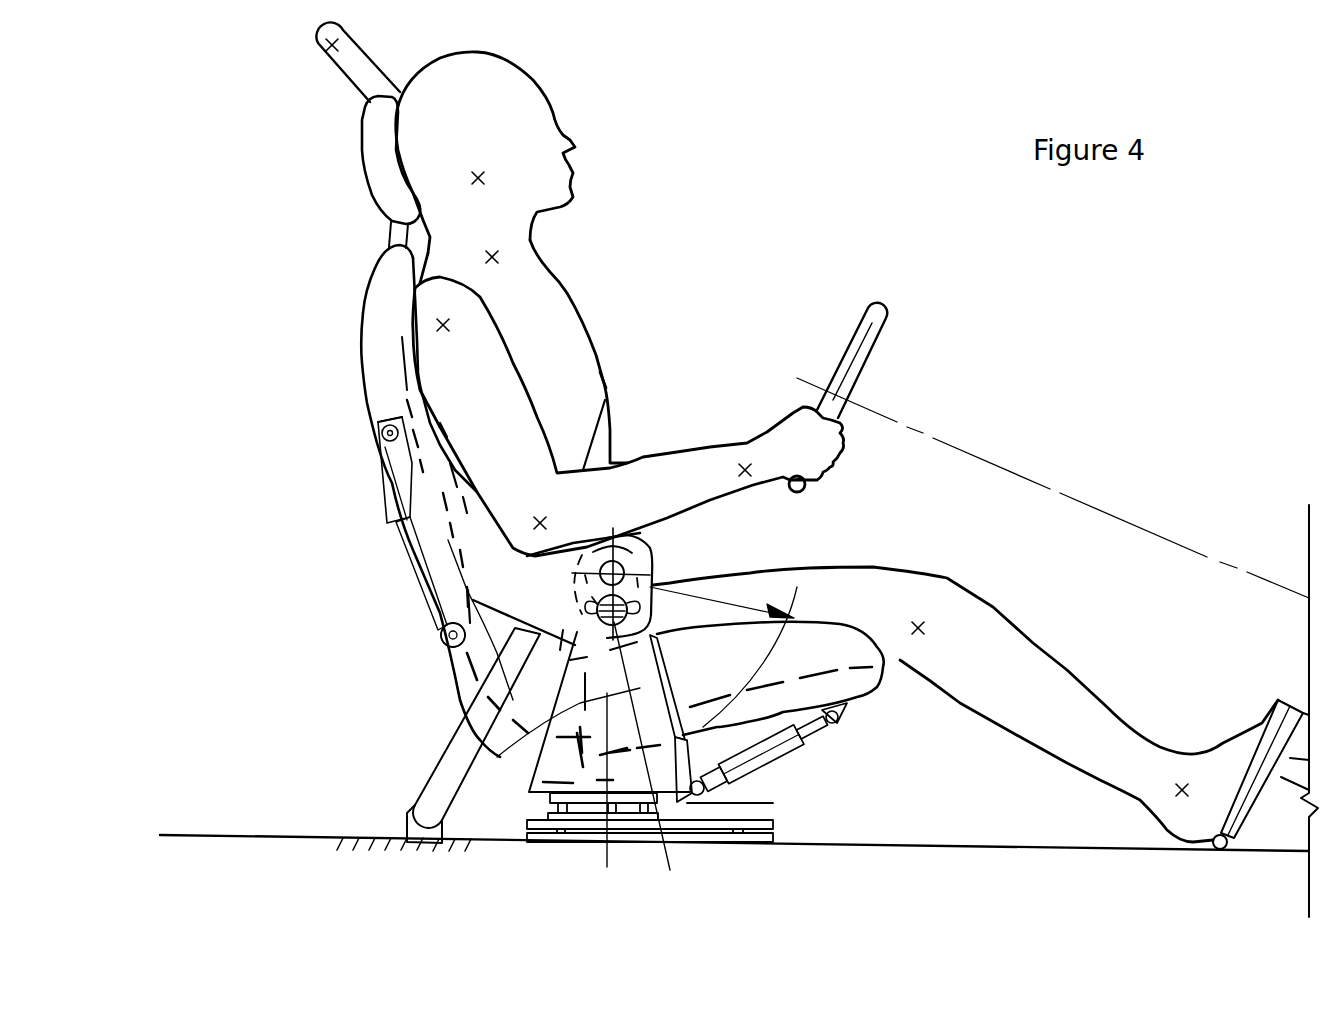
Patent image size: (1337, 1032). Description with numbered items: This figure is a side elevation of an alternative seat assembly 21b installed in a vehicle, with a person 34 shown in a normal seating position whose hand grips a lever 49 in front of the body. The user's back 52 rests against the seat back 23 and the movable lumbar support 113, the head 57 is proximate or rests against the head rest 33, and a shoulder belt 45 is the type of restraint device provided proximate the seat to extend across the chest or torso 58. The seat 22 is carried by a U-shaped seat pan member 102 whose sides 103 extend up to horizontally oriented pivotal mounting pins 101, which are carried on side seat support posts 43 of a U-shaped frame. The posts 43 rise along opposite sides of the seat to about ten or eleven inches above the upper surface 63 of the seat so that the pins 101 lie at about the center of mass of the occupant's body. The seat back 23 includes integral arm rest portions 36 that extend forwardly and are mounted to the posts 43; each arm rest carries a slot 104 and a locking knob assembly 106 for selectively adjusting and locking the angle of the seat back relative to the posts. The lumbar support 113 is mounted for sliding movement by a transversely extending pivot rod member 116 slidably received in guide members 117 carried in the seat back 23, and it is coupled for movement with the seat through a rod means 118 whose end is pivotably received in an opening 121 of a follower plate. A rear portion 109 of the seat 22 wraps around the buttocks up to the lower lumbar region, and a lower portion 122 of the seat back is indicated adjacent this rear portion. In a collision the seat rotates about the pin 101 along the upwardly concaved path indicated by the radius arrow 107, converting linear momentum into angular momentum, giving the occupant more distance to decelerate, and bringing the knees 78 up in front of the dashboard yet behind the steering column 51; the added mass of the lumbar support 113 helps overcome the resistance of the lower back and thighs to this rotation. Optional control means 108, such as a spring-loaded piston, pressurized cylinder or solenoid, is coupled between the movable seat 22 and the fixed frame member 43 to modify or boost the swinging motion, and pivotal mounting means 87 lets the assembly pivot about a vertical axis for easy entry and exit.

The head 57 is at (413, 122).
The head rest 33 is at (378, 165).
The person 34 is at (560, 330).
The chest or torso 58 is at (593, 379).
The control lever 49 is at (872, 352).
The steering column 51 is at (1147, 525).
The back 52 is at (405, 385).
The guide members 117 is at (380, 424).
The pivot rod member 116 is at (383, 436).
The seat back 23 is at (382, 487).
The lumbar support 113 is at (427, 540).
The seat assembly 21b is at (360, 561).
The arm rest portions 36 is at (573, 563).
The rod means 118 is at (440, 630).
The opening 121 is at (443, 626).
The rear portion 109 is at (440, 634).
The lower seat back portion 122 is at (452, 660).
The side seat support posts 43 is at (547, 690).
The shoulder belt 45 is at (455, 764).
The sides 103 is at (510, 745).
The pivotal mounting pins 101 is at (625, 568).
The slot 104 is at (583, 608).
The locking knob assembly 106 is at (618, 630).
The upper surface 63 is at (645, 722).
The pivotal mounting means 87 is at (649, 760).
The seat pan member 102 is at (692, 800).
The seat 22 is at (835, 650).
The radius arrow 107 is at (723, 600).
The control means 108 is at (770, 760).
The knees 78 is at (945, 578).